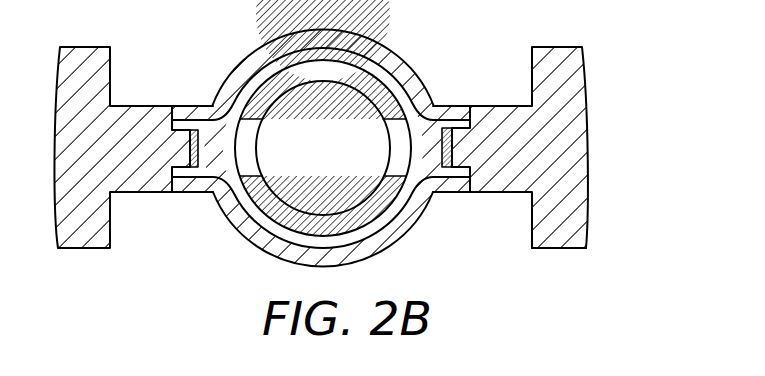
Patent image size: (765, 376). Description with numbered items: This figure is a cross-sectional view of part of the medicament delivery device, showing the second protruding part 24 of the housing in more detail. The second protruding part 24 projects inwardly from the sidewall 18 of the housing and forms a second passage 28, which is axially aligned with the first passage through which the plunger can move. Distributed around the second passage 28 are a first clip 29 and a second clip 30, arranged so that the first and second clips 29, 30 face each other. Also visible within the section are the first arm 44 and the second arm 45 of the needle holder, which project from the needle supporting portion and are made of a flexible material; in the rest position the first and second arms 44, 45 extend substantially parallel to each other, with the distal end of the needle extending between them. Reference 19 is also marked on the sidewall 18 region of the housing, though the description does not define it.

The sidewall 18 is at (532, 67).
The frame member wall 19 is at (523, 228).
The second protruding part 24 is at (152, 118).
The second passage 28 is at (222, 134).
The first clip 29 is at (183, 158).
The second clip 30 is at (458, 158).
The first arm 44 is at (366, 84).
The second arm 45 is at (366, 214).